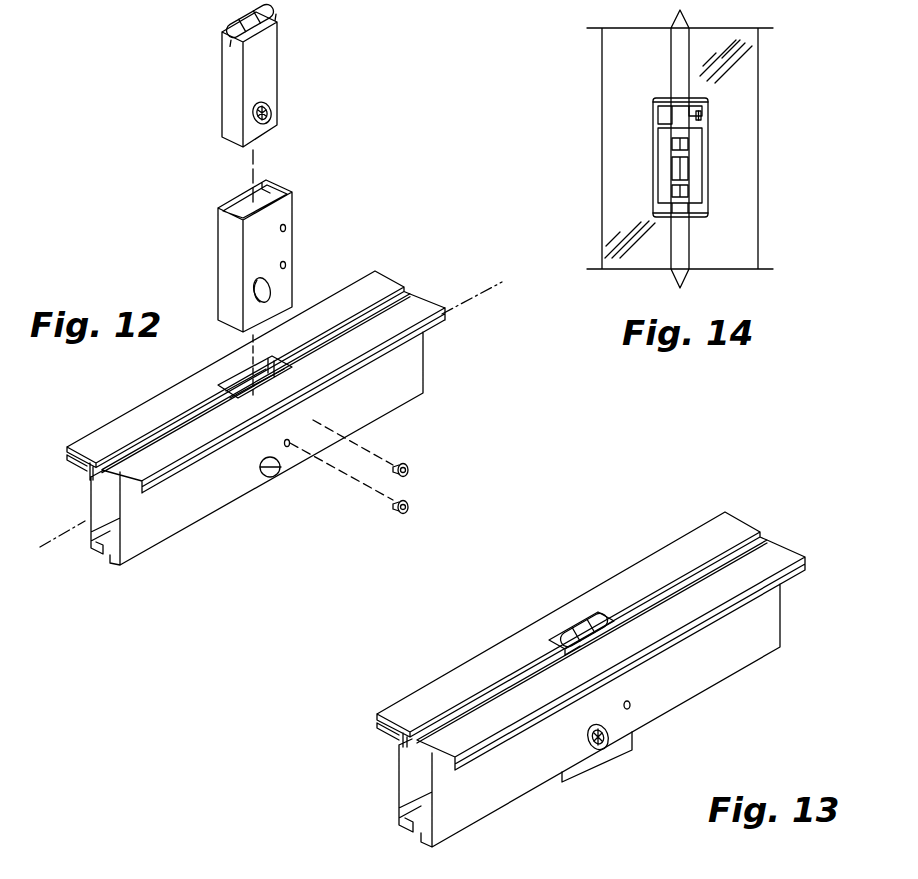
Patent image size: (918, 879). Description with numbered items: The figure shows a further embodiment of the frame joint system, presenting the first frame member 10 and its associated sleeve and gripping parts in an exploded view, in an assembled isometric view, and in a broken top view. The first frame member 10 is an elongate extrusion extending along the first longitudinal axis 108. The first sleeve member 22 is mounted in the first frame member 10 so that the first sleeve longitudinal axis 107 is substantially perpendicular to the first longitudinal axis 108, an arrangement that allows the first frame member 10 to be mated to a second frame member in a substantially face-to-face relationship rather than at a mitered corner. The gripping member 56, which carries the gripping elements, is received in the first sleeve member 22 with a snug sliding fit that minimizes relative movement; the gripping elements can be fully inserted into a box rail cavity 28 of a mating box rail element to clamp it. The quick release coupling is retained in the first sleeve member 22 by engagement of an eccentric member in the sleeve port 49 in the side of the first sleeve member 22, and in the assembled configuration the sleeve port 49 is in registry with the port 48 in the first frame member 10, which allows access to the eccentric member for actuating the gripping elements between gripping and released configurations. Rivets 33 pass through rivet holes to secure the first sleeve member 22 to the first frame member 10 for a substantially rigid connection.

In FIG. 12, the first frame member 10 is at (175, 515).
In FIG. 13, the first frame member 10 is at (760, 632).
In FIG. 14, the first frame member 10 is at (735, 242).
In FIG. 12, the first sleeve member 22 is at (227, 238).
In FIG. 13, the first sleeve member 22 is at (623, 748).
In FIG. 14, the first sleeve member 22 is at (656, 155).
In FIG. 14, the box rail cavity 28 is at (672, 113).
In FIG. 12, the rivets 33 is at (442, 502).
In FIG. 13, the rivets 33 is at (632, 703).
In FIG. 14, the rivets 33 is at (700, 116).
In FIG. 12, the port 48 is at (287, 470).
In FIG. 12, the sleeve port 49 is at (273, 293).
In FIG. 12, the gripping member 56 is at (233, 82).
In FIG. 14, the gripping member 56 is at (692, 163).
In FIG. 12, the first sleeve longitudinal axis 107 is at (256, 158).
In FIG. 12, the first longitudinal axis 108 is at (467, 300).